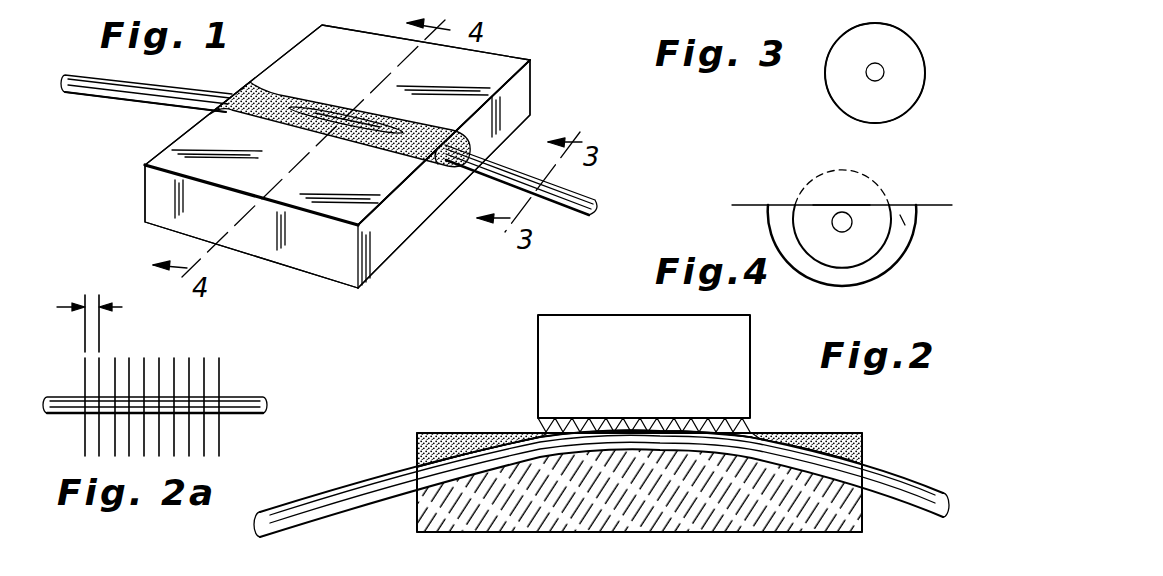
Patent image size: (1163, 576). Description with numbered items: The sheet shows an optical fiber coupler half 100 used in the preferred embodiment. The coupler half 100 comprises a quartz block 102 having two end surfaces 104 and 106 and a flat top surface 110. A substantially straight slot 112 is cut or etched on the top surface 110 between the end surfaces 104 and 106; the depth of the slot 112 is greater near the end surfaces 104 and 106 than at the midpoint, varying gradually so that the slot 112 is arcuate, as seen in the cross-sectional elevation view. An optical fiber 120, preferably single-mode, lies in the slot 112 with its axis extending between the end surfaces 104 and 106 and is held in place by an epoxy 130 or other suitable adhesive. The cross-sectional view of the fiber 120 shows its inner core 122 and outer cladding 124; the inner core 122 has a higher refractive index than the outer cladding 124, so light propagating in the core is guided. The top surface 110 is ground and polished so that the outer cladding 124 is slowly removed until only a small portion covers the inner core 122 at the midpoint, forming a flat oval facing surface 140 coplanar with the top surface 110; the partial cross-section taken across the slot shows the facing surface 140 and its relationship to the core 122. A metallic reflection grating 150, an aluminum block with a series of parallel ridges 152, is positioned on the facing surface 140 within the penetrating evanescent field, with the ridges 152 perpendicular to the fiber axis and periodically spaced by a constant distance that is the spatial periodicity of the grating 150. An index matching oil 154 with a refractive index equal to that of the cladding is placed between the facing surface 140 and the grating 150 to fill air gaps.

In FIG. 1, the optical fiber coupler half 100 is at (285, 276).
In FIG. 2, the optical fiber coupler half 100 is at (520, 383).
In FIG. 1, the quartz block 102 is at (165, 205).
In FIG. 2, the quartz block 102 is at (685, 515).
In FIG. 1, the end surface 104 is at (382, 252).
In FIG. 2, the end surface 104 is at (862, 518).
In FIG. 1, the end surface 106 is at (145, 190).
In FIG. 2, the end surface 106 is at (413, 517).
In FIG. 1, the flat top surface 110 is at (512, 57).
In FIG. 4, the flat top surface 110 is at (745, 205).
In FIG. 1, the slot 112 is at (440, 163).
In FIG. 4, the slot 112 is at (770, 222).
In FIG. 2, the slot 112 is at (457, 482).
In FIG. 1, the optical fiber 120 is at (568, 208).
In FIG. 3, the optical fiber 120 is at (832, 105).
In FIG. 4, the optical fiber 120 is at (885, 250).
In FIG. 2A, the optical fiber 120 is at (245, 397).
In FIG. 2, the optical fiber 120 is at (365, 488).
In FIG. 3, the inner core 122 is at (868, 67).
In FIG. 4, the inner core 122 is at (848, 220).
In FIG. 3, the outer cladding 124 is at (838, 80).
In FIG. 4, the outer cladding 124 is at (873, 227).
In FIG. 1, the epoxy 130 is at (258, 84).
In FIG. 4, the epoxy 130 is at (905, 225).
In FIG. 2, the epoxy 130 is at (417, 442).
In FIG. 1, the facing surface 140 is at (346, 122).
In FIG. 4, the facing surface 140 is at (813, 205).
In FIG. 2, the facing surface 140 is at (627, 450).
In FIG. 2, the metallic reflection grating 150 is at (752, 330).
In FIG. 2A, the ridges 152 is at (204, 358).
In FIG. 2, the ridges 152 is at (748, 428).
In FIG. 2, the index matching oil 154 is at (730, 440).